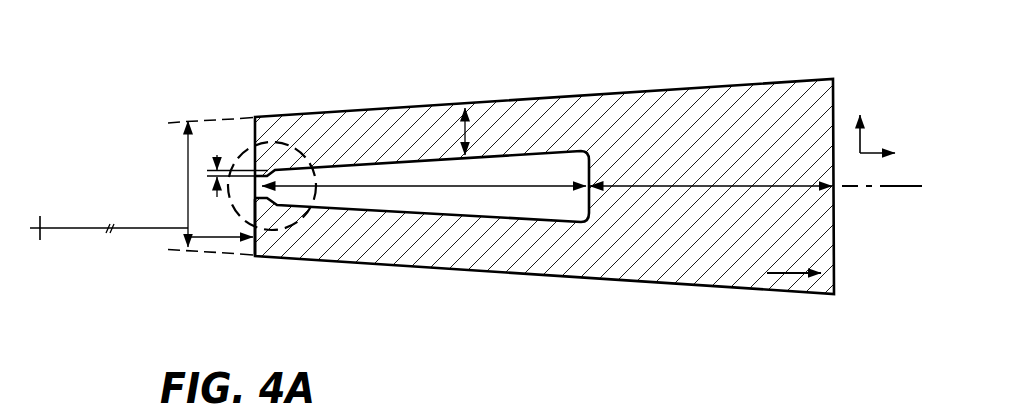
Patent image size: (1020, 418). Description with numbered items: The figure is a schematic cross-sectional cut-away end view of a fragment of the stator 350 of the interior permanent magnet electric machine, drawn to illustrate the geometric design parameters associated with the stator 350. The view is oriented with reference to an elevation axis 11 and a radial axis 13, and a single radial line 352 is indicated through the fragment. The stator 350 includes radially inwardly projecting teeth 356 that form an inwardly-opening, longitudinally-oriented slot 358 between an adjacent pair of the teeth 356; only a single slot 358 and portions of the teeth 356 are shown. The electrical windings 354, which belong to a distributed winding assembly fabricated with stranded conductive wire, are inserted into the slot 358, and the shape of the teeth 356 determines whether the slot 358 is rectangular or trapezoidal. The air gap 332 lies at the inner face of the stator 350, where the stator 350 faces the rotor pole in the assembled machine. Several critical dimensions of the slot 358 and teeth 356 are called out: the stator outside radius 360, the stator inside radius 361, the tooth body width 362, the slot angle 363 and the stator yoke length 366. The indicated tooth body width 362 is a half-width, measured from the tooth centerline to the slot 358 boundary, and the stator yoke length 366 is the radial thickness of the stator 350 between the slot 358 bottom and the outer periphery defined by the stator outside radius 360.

The stator 350 is at (819, 61).
The radial line 352 is at (888, 190).
The electrical windings 354 is at (207, 172).
The teeth 356 is at (342, 113).
The slot 358 is at (512, 203).
The stator outside radius 360 is at (787, 275).
The stator inside radius 361 is at (130, 233).
The tooth body width 362 is at (467, 130).
The slot angle 363 is at (187, 221).
The stator yoke length 366 is at (780, 187).
The air gap 332 is at (253, 246).
The elevation axis 11 is at (873, 110).
The radial axis 13 is at (922, 166).